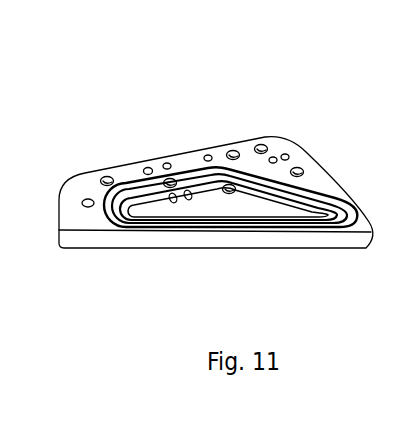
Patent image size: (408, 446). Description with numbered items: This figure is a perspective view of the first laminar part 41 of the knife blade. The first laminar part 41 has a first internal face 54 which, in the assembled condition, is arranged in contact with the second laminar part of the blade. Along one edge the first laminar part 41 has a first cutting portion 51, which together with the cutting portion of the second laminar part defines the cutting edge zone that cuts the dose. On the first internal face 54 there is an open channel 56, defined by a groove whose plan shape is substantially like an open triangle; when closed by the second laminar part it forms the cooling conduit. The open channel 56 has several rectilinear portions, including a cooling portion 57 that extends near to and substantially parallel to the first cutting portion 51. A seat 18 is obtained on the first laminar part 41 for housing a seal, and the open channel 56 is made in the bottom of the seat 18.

The first laminar part 41 is at (83, 217).
The first cutting portion 51 is at (146, 237).
The first internal face 54 is at (133, 174).
The seat 18 is at (212, 170).
The open channel 56 is at (305, 192).
The cooling portion 57 is at (278, 223).